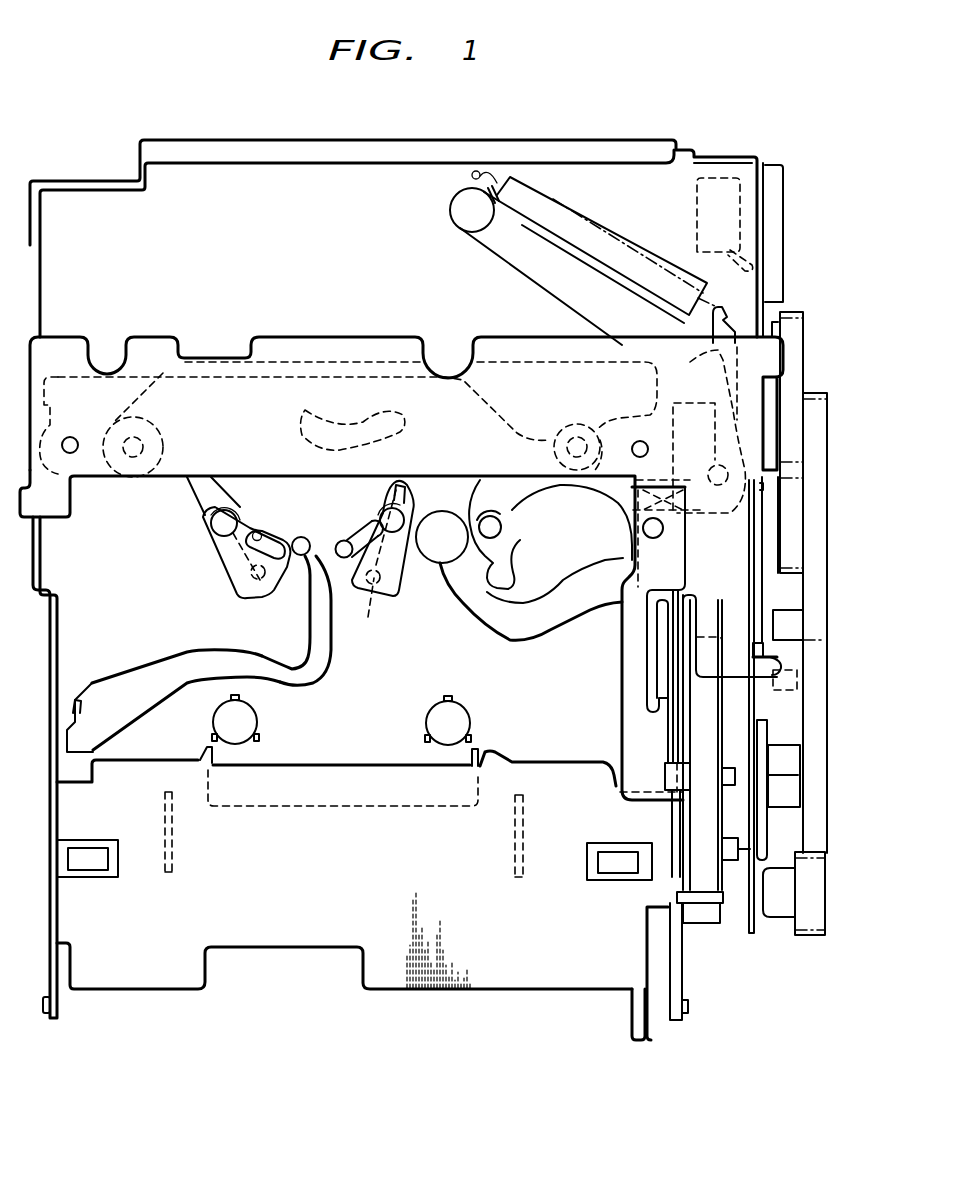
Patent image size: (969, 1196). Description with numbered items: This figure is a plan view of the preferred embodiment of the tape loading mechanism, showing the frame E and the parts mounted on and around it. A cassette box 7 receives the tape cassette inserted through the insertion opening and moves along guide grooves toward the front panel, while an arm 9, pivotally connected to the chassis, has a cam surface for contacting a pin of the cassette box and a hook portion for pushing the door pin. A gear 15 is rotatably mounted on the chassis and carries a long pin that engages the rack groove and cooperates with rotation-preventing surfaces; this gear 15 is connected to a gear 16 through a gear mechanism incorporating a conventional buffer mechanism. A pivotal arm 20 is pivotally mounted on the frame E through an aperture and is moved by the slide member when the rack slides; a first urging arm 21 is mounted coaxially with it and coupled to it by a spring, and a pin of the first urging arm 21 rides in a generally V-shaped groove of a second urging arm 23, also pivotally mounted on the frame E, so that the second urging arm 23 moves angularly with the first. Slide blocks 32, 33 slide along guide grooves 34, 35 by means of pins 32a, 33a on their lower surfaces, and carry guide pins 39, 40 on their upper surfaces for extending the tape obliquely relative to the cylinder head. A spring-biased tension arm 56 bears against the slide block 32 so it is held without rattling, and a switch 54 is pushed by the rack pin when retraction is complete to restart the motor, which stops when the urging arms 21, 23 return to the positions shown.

The cassette box 7 is at (333, 793).
The arm 9 is at (632, 1020).
The gear 15 is at (795, 362).
The gear 16 is at (812, 779).
The pivotal arm 20 is at (465, 222).
The first urging arm 21 is at (140, 372).
The second urging arm 23 is at (343, 360).
The slide block 32 is at (233, 561).
The pin 32a is at (238, 600).
The slide block 33 is at (350, 580).
The pin 33a is at (368, 617).
The guide groove 34 is at (203, 490).
The guide groove 35 is at (413, 495).
The guide pin 39 is at (264, 533).
The guide pin 40 is at (347, 543).
The switch 54 is at (730, 207).
The tension arm 56 is at (147, 677).
The frame E is at (513, 350).